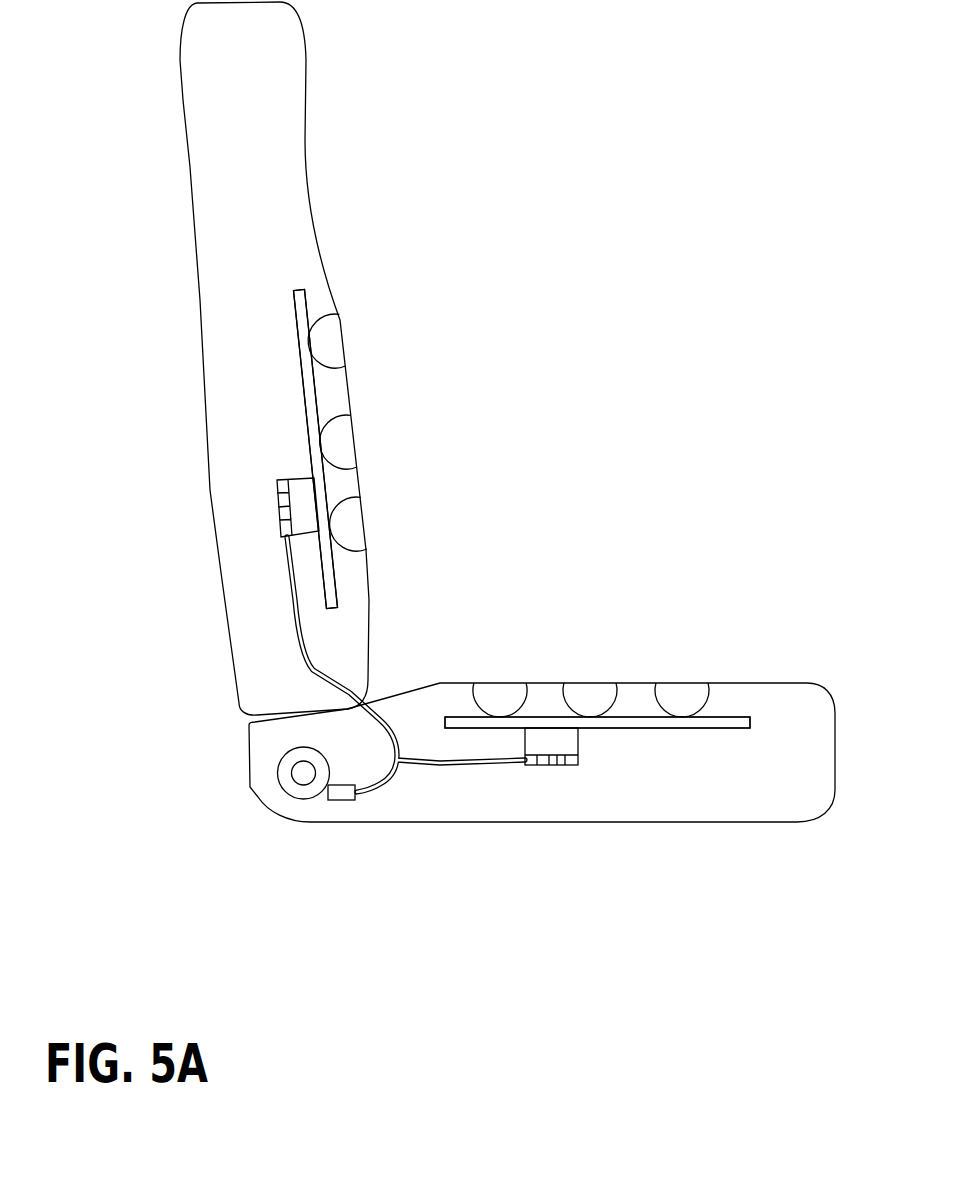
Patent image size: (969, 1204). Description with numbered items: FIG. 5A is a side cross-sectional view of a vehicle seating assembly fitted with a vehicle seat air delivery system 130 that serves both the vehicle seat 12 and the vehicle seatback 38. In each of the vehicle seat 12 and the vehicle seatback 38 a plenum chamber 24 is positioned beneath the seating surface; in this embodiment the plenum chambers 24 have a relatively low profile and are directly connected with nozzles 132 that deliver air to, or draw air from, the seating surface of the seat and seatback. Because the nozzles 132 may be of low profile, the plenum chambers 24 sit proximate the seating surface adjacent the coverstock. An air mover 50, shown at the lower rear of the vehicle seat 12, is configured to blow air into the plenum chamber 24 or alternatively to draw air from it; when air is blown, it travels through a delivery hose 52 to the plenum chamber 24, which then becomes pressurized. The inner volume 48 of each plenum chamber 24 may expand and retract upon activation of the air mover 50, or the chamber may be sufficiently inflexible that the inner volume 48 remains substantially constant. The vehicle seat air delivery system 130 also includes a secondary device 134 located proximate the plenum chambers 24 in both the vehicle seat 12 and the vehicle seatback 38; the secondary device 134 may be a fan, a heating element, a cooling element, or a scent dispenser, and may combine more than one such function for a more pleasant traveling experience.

The vehicle seat 12 is at (630, 617).
The plenum chamber 24 is at (308, 342).
The vehicle seatback 38 is at (327, 200).
The inner volume 48 is at (310, 418).
The air mover 50 is at (307, 796).
The delivery hose 52 is at (387, 780).
The vehicle seat air delivery system 130 is at (392, 295).
The nozzles 132 is at (333, 348).
The secondary device 134 is at (302, 507).